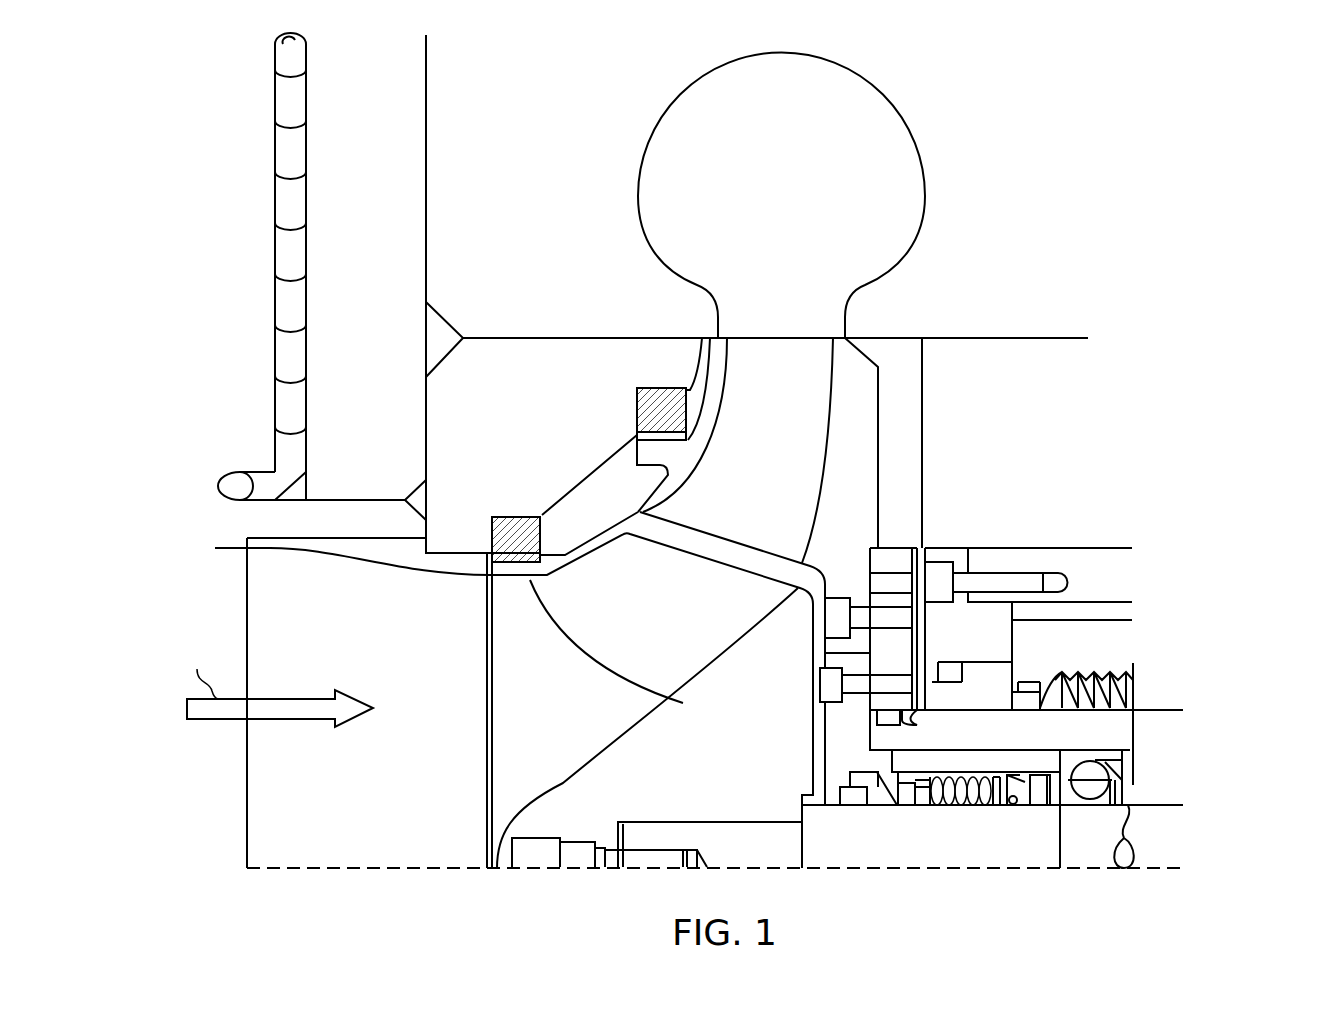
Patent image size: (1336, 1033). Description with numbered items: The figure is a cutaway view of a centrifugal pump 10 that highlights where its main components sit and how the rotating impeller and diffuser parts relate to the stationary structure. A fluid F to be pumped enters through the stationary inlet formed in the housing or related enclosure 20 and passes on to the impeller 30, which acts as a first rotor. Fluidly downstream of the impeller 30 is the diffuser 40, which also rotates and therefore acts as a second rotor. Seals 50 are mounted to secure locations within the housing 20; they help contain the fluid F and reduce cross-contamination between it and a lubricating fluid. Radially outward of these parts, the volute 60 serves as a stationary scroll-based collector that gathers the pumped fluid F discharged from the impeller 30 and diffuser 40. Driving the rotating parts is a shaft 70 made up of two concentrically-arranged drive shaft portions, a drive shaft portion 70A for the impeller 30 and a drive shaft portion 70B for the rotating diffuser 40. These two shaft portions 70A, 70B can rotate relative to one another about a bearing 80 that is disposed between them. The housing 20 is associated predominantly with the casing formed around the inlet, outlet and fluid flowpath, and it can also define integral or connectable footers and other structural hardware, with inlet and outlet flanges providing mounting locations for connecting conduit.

The centrifugal pump 10 is at (203, 214).
The housing 20 is at (397, 656).
The impeller 30 is at (682, 627).
The diffuser 40 is at (774, 473).
The seals 50 is at (628, 407).
The volute 60 is at (735, 190).
The shaft 70 is at (1197, 710).
The drive shaft portion 70A is at (963, 849).
The drive shaft portion 70B is at (997, 746).
The bearing 80 is at (1090, 798).